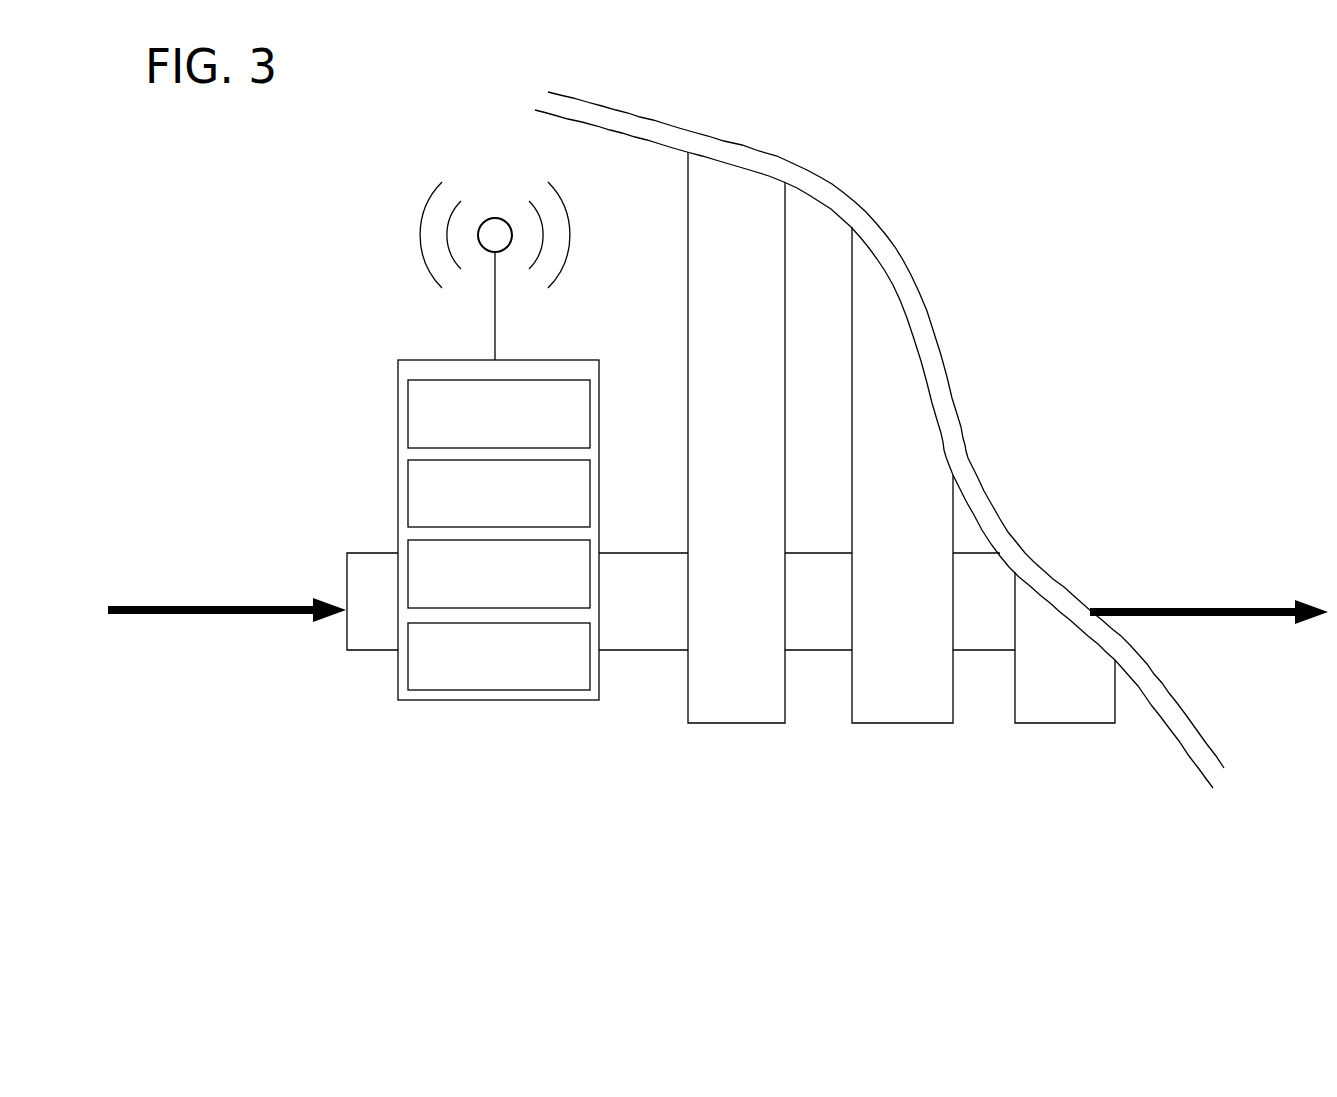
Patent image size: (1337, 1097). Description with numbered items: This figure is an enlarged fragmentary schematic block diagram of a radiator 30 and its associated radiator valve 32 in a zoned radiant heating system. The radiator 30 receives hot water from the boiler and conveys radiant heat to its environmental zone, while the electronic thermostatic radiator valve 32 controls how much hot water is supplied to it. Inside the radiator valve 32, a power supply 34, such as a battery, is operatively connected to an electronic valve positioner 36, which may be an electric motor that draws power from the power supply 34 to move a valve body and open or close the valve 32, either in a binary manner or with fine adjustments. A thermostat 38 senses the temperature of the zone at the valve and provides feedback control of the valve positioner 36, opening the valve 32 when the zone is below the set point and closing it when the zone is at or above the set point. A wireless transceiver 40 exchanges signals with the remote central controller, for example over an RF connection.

The radiator 30 is at (805, 776).
The thermostatic radiator valve 32 is at (449, 750).
The power supply 34 is at (408, 468).
The valve positioner 36 is at (590, 585).
The thermostat 38 is at (403, 660).
The wireless transceiver 40 is at (560, 380).